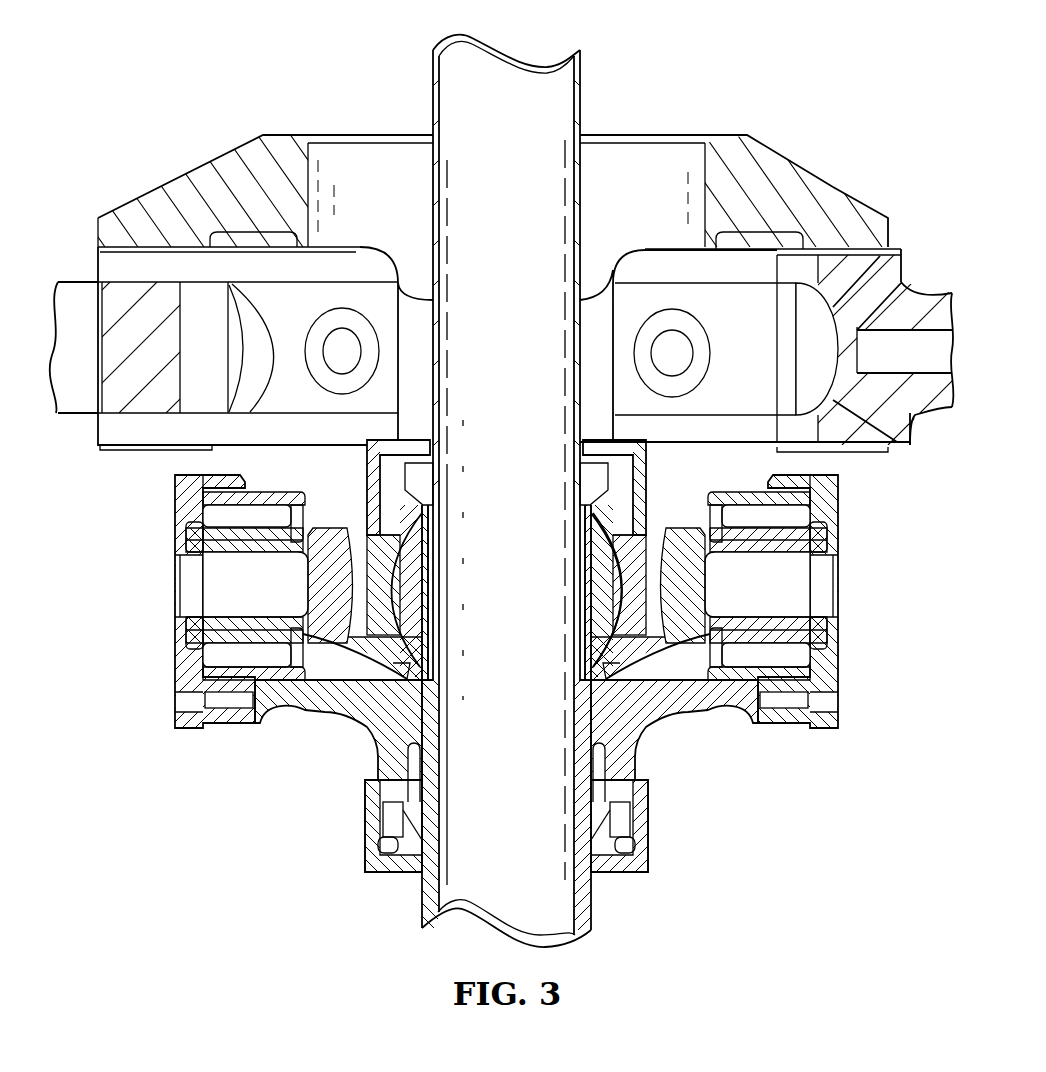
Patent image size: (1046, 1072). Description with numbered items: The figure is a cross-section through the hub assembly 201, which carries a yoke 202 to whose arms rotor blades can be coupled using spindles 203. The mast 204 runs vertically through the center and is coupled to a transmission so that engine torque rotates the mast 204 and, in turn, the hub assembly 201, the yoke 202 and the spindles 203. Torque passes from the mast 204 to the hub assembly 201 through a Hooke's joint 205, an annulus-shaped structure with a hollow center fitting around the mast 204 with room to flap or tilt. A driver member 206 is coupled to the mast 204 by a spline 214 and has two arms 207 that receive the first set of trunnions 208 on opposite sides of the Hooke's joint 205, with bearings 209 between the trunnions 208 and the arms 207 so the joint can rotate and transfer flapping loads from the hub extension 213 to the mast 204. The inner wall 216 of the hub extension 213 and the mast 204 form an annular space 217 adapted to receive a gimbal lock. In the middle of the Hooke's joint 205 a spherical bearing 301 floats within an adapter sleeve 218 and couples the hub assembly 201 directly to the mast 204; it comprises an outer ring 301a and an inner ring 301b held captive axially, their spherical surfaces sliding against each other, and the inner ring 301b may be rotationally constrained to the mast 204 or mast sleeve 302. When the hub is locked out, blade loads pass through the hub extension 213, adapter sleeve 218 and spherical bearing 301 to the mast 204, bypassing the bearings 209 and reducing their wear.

The hub assembly 201 is at (243, 60).
The yoke 202 is at (73, 282).
The spindles 203 is at (928, 287).
The mast 204 is at (582, 115).
The Hooke's joint 205 is at (314, 528).
The driver member 206 is at (302, 707).
The arms 207 is at (218, 482).
The first set of trunnions 208 is at (262, 546).
The bearings 209 is at (175, 652).
The hub extension 213 is at (220, 162).
The spline 214 is at (648, 834).
The inner wall 216 is at (679, 162).
The annular space 217 is at (363, 160).
The adapter sleeve 218 is at (428, 438).
The spherical bearing 301 is at (612, 508).
The outer ring 301a is at (400, 620).
The inner ring 301b is at (413, 572).
The mast sleeve 302 is at (434, 526).